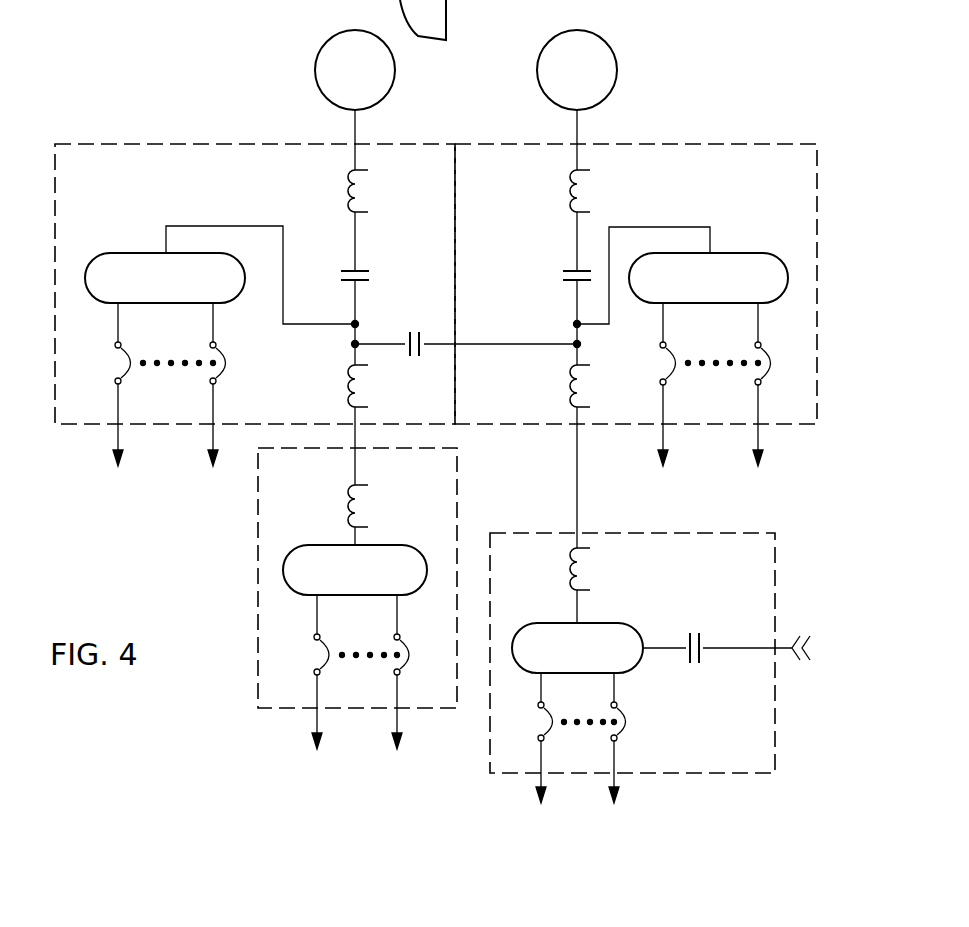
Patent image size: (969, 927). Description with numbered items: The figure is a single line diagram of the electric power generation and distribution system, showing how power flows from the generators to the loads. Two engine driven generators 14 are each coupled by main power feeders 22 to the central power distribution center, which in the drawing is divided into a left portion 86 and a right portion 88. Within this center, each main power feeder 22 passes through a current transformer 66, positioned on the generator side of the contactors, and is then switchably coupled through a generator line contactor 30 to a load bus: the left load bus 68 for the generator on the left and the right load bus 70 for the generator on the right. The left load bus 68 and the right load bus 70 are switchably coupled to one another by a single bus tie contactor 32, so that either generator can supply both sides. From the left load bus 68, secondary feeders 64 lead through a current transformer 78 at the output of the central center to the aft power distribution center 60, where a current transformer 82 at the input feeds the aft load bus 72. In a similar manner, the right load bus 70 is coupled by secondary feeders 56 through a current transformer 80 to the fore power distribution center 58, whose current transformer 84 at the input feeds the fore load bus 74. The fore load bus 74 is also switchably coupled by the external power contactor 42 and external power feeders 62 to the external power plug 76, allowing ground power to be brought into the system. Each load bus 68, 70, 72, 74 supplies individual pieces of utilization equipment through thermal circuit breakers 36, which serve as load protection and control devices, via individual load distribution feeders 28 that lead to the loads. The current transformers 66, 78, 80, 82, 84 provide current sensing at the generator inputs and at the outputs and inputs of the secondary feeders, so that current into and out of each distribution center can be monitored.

The engine driven generator 14 is at (317, 62).
The main power feeder 22 is at (355, 126).
The individual load distribution feeder 28 is at (88, 447).
The generator line contactor 30 is at (362, 268).
The bus tie contactor 32 is at (420, 340).
The thermal circuit breaker 36 is at (231, 366).
The external power contactor 42 is at (690, 662).
The secondary feeder 56 is at (577, 505).
The fore power distribution center 58 is at (632, 653).
The aft power distribution center 60 is at (357, 578).
The external power feeder 62 is at (797, 651).
The secondary feeder 64 is at (355, 441).
The current transformer 66 is at (352, 173).
The left load bus 68 is at (128, 255).
The right load bus 70 is at (772, 262).
The aft load bus 72 is at (400, 545).
The fore load bus 74 is at (622, 625).
The external power plug 76 is at (793, 623).
The current transformer 78 is at (367, 406).
The current transformer 80 is at (590, 406).
The current transformer 82 is at (367, 526).
The current transformer 84 is at (570, 591).
The power distribution box 86 is at (255, 284).
The power distribution box 88 is at (636, 284).